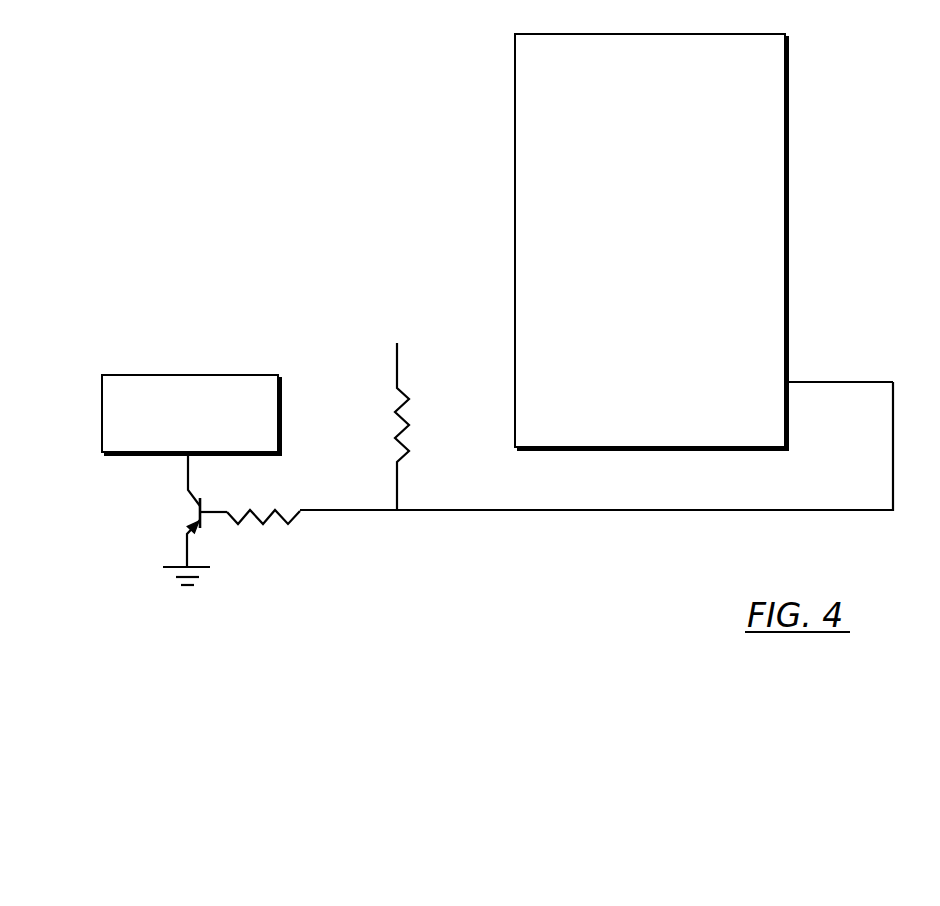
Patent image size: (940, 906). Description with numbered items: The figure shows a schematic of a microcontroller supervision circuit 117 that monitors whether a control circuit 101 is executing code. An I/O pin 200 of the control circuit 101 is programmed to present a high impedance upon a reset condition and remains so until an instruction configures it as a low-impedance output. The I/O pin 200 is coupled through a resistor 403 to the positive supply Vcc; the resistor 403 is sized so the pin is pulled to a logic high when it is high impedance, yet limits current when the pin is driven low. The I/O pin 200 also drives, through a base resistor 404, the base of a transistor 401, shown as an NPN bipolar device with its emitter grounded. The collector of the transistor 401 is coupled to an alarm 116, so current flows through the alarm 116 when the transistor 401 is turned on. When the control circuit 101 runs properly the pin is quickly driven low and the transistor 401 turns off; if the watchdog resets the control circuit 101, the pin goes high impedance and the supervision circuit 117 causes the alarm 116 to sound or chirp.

The control circuit 101 is at (667, 280).
The I/O pin 200 is at (746, 361).
The supervision circuit 117 is at (446, 572).
The resistor 403 is at (414, 413).
The alarm 116 is at (170, 437).
The transistor 401 is at (176, 503).
The base resistor 404 is at (252, 507).